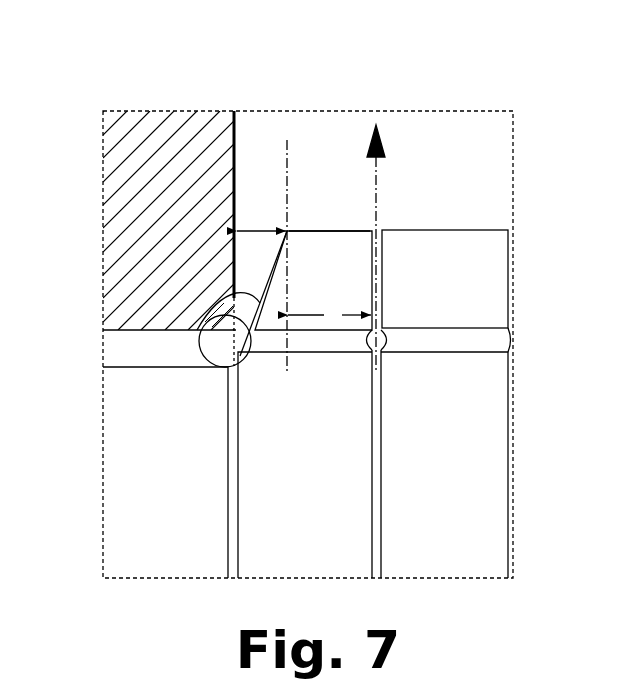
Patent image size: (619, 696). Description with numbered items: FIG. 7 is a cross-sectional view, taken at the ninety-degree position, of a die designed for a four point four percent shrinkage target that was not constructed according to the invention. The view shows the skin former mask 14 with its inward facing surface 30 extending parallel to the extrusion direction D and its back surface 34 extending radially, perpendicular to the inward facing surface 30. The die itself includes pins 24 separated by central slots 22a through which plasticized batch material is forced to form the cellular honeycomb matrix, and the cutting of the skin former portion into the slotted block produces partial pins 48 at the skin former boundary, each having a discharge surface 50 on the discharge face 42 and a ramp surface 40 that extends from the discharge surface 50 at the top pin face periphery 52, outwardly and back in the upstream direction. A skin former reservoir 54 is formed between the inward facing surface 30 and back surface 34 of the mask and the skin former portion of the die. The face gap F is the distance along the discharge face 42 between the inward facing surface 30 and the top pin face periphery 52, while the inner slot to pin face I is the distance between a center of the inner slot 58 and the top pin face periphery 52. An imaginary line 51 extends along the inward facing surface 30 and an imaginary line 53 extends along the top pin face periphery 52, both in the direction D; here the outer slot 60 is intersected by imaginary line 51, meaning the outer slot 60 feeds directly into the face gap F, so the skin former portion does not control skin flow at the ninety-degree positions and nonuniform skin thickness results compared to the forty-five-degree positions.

The skin former mask 14 is at (127, 186).
The inward facing surface 30 is at (237, 122).
The back surface 34 is at (118, 333).
The ramp surface 40 is at (205, 325).
The skin former reservoir 54 is at (160, 350).
The discharge surface 50 is at (322, 252).
The partial pins 48 is at (312, 229).
The imaginary line 51 is at (249, 358).
The top pin face periphery 52 is at (286, 150).
The imaginary line 53 is at (288, 338).
The discharge face 42 is at (470, 229).
The pins 24 is at (485, 257).
The inner slot 58 is at (375, 446).
The central slots 22a is at (377, 510).
The outer slot 60 is at (232, 476).
The extrusion direction D is at (380, 176).
The face gap F is at (265, 227).
The inner slot to pin face I is at (337, 326).